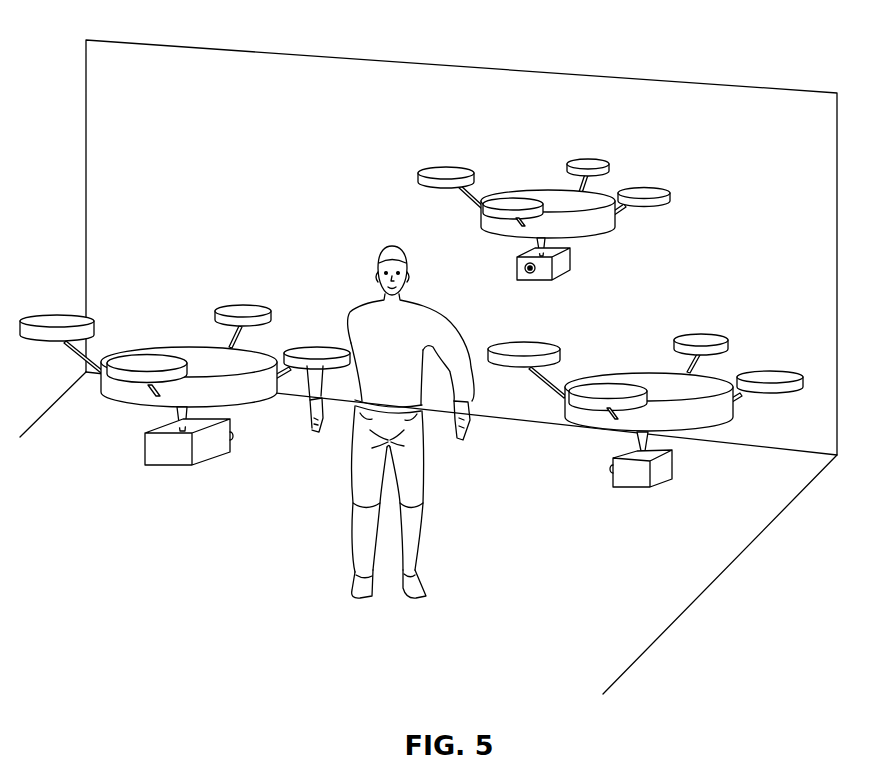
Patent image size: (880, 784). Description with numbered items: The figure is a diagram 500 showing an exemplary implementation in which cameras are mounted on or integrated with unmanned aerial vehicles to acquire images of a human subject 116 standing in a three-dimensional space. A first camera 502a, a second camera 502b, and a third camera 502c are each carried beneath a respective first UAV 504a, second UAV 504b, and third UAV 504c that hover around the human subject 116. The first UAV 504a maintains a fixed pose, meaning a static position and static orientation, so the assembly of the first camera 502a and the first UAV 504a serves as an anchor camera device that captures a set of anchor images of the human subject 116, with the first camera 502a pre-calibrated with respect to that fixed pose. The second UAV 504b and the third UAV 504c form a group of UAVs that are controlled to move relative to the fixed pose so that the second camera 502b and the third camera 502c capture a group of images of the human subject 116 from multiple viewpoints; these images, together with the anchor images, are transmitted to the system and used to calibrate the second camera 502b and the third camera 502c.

The diagram 500 is at (792, 70).
The human subject 116 is at (355, 328).
The first UAV 504a is at (200, 360).
The second UAV 504b is at (550, 197).
The third UAV 504c is at (662, 386).
The first camera 502a is at (176, 458).
The second camera 502b is at (560, 262).
The third camera 502c is at (636, 474).